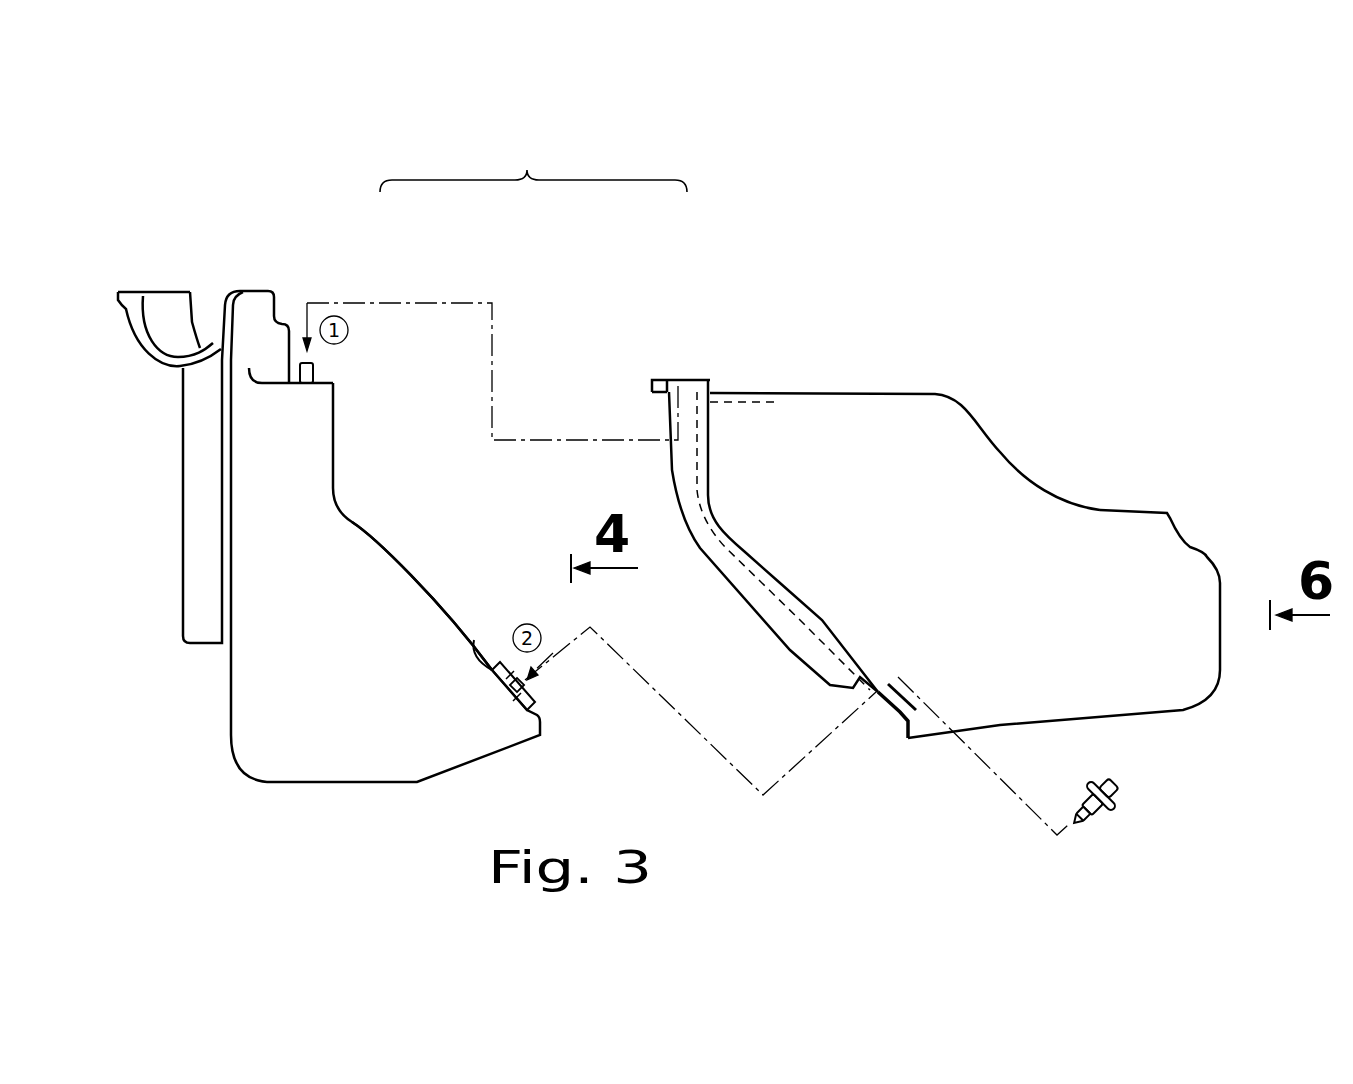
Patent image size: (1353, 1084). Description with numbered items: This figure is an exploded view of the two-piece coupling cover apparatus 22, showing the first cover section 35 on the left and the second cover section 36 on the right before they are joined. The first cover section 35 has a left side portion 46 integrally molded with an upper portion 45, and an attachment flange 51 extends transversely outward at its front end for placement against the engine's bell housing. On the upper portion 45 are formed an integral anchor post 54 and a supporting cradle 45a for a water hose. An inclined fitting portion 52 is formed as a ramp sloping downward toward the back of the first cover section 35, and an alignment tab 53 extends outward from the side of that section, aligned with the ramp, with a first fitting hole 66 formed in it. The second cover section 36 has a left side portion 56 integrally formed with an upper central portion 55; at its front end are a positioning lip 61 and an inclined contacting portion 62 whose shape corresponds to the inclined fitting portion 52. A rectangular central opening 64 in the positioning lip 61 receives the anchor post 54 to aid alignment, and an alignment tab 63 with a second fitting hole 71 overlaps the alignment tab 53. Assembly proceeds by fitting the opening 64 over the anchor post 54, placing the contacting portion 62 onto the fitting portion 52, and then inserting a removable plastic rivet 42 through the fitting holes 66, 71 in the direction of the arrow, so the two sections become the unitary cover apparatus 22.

The cover apparatus 22 is at (533, 161).
The first cover section 35 is at (290, 294).
The second cover section 36 is at (757, 369).
The supporting cradle 45a is at (165, 290).
The upper portion 45 is at (325, 381).
The left side portion 46 is at (273, 695).
The attachment flange 51 is at (218, 448).
The inclined fitting portion 52 is at (372, 525).
The alignment tab 53 is at (488, 684).
The anchor post 54 is at (298, 368).
The upper central portion 55 is at (808, 393).
The left side portion 56 is at (884, 471).
The positioning lip 61 is at (722, 578).
The inclined contacting portion 62 is at (777, 588).
The alignment tab 63 is at (894, 712).
The rectangular central opening 64 is at (684, 386).
The first fitting hole 66 is at (524, 686).
The second fitting hole 71 is at (880, 697).
The removable plastic rivet 42 is at (1115, 782).